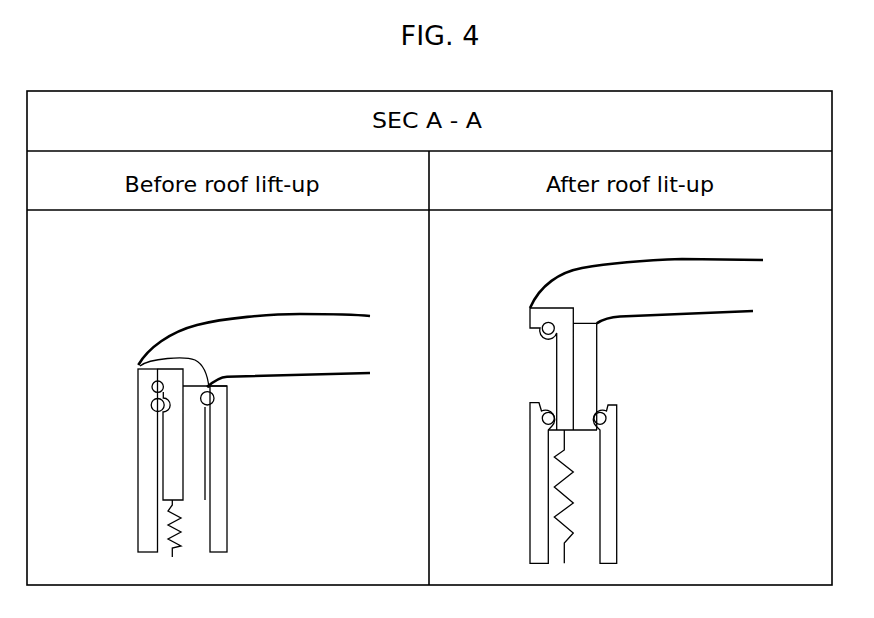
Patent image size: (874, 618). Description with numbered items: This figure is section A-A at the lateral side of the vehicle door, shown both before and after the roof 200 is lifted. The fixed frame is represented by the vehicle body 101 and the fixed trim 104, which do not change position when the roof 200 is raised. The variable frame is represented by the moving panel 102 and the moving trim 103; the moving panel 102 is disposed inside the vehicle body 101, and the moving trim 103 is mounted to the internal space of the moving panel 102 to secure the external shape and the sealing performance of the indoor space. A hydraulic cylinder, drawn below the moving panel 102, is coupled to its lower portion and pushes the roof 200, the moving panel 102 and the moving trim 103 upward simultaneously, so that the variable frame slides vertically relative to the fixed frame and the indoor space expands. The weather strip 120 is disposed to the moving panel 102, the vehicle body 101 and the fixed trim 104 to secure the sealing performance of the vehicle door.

The vehicle body 101 is at (152, 488).
The moving panel 102 is at (170, 448).
The moving trim 103 is at (198, 490).
The fixed trim 104 is at (228, 458).
The weather strip 120 is at (151, 405).
The roof 200 is at (340, 313).